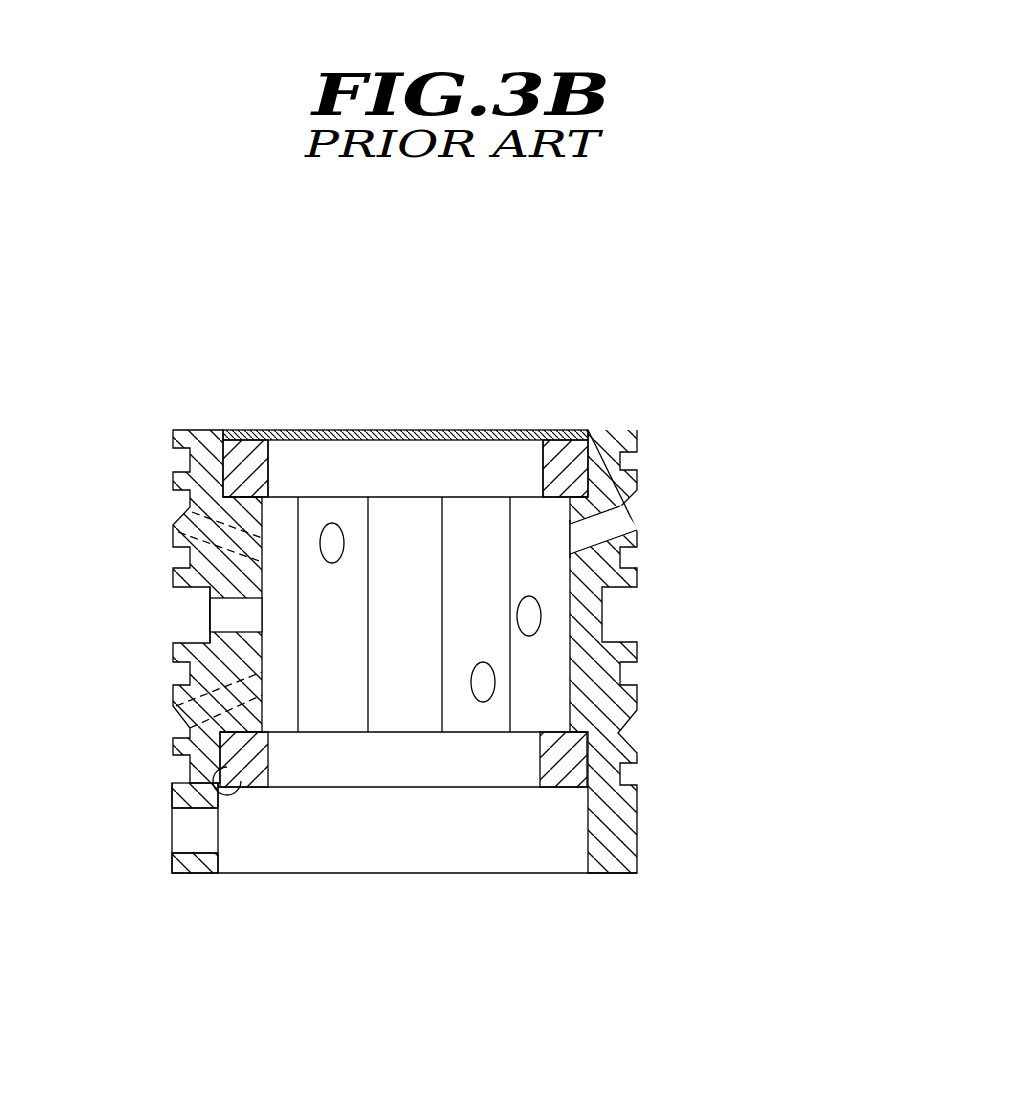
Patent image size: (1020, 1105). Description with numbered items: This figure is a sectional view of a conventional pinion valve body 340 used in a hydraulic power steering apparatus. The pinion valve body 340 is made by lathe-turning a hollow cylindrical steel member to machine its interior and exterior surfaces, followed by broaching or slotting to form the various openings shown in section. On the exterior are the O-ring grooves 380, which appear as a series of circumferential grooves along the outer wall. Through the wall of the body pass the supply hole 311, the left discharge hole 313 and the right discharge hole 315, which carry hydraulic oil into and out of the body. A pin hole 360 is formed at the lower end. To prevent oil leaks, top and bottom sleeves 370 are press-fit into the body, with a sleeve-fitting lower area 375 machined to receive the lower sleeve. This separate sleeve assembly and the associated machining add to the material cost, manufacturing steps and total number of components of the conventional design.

The pinion valve body 340 is at (714, 377).
The top and bottom sleeves 370 is at (565, 432).
The left discharge hole 313 is at (330, 543).
The supply hole 311 is at (220, 614).
The right discharge hole 315 is at (240, 730).
The sleeve-fitting lower area 375 is at (228, 780).
The pin hole 360 is at (180, 830).
The O-ring grooves 380 is at (637, 560).